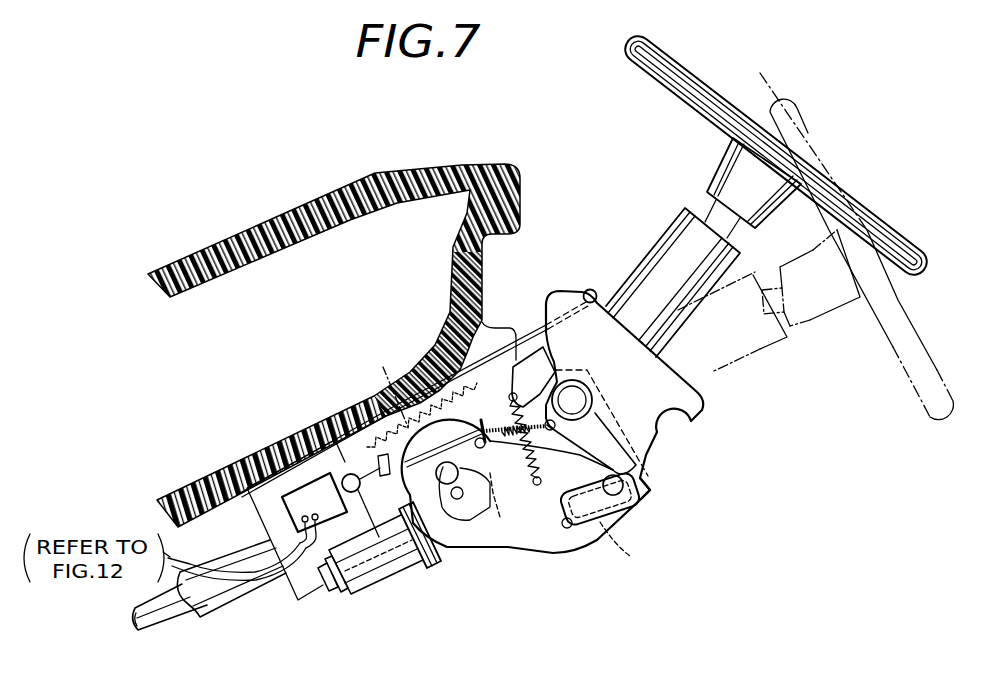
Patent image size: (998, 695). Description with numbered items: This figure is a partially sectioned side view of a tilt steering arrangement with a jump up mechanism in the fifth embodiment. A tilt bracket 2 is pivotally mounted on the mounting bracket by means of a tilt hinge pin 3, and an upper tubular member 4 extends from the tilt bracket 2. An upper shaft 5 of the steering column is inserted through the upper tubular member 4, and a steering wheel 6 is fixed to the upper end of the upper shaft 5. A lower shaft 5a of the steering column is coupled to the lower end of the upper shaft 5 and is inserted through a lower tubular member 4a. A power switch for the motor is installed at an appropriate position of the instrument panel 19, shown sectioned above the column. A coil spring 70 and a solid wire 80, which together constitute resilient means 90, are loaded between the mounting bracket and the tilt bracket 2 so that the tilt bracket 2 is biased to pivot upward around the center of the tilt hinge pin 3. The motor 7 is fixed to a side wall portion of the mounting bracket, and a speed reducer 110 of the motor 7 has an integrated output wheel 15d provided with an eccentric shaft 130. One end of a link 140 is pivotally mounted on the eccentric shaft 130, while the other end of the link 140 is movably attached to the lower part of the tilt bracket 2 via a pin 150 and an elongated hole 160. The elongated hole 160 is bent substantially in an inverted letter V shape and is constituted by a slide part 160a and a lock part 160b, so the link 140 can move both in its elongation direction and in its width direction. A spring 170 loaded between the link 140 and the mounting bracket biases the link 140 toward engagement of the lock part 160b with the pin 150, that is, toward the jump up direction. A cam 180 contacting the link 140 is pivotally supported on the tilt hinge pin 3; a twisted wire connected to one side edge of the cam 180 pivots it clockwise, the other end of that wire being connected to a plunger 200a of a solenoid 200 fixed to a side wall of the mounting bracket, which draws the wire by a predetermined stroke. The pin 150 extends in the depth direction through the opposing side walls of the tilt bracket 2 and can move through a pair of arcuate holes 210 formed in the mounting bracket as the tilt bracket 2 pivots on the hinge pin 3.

The tilt bracket 2 is at (680, 407).
The tilt hinge pin 3 is at (598, 393).
The upper tubular member 4 is at (638, 266).
The lower tubular member 4a is at (236, 590).
The upper shaft 5 is at (706, 213).
The lower shaft 5a is at (168, 616).
The steering wheel 6 is at (760, 73).
The motor 7 is at (377, 577).
The output wheel 15d is at (460, 485).
The instrument panel 19 is at (468, 390).
The coil spring 70 is at (354, 458).
The solid wire 80 is at (490, 418).
The resilient means 90 is at (534, 322).
The speed reducer 110 is at (413, 491).
The eccentric shaft 130 is at (461, 500).
The link 140 is at (541, 540).
The pin 150 is at (620, 492).
The elongated hole 160 is at (612, 521).
The slide part 160a is at (651, 486).
The lock part 160b is at (578, 525).
The spring 170 is at (600, 438).
The cam 180 is at (603, 428).
The solenoid 200 is at (297, 497).
The plunger 200a is at (330, 470).
The arcuate holes 210 is at (607, 540).